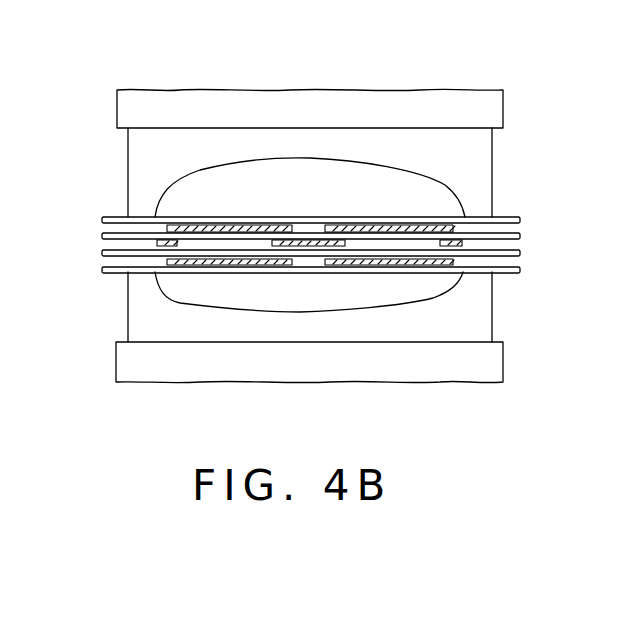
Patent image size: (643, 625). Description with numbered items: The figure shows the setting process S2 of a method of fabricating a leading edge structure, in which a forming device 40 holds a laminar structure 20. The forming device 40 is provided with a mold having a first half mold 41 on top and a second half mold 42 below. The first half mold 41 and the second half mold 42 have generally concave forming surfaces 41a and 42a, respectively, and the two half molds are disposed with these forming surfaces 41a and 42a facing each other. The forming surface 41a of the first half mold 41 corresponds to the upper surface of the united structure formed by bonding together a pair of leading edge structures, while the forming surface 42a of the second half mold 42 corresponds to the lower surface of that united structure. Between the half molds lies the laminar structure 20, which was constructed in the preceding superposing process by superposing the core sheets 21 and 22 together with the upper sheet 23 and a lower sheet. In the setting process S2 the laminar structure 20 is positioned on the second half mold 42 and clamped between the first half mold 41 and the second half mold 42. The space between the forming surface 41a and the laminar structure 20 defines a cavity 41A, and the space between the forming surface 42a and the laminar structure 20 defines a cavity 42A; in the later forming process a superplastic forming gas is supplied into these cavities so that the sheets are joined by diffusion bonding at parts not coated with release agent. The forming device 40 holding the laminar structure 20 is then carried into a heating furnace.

The laminar structure 20 is at (105, 204).
The core sheet 21 is at (515, 233).
The core sheet 22 is at (515, 253).
The upper sheet 23 is at (515, 217).
The forming device 40 is at (323, 84).
The first half mold 41 is at (482, 147).
The cavity 41A is at (245, 182).
The forming surface 41a is at (381, 172).
The second half mold 42 is at (482, 320).
The cavity 42A is at (250, 292).
The forming surface 42a is at (392, 307).
The setting process S2 is at (49, 306).